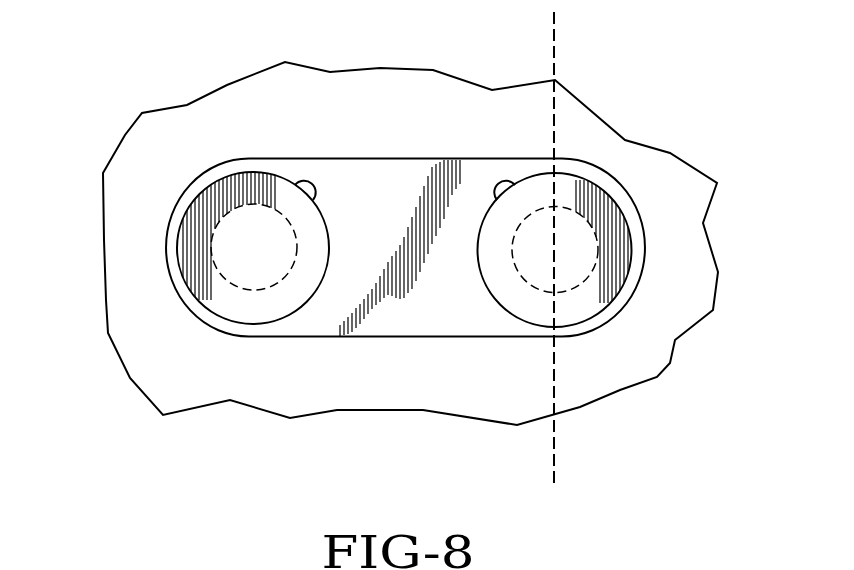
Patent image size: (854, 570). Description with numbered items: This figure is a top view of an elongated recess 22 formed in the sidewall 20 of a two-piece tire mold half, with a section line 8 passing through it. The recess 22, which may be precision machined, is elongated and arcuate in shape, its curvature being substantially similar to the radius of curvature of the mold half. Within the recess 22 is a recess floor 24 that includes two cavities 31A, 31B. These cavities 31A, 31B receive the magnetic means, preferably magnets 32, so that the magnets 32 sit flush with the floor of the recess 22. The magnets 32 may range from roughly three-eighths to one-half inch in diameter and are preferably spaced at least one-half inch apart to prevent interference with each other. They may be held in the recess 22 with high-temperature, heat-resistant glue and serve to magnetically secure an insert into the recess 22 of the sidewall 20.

The sidewall 20 is at (147, 172).
The recess 22 is at (402, 158).
The recess floor 24 is at (415, 303).
The cavity 31A is at (313, 200).
The cavity 31B is at (497, 200).
The magnet 32 is at (232, 305).
The section line 8- 8 is at (480, 483).